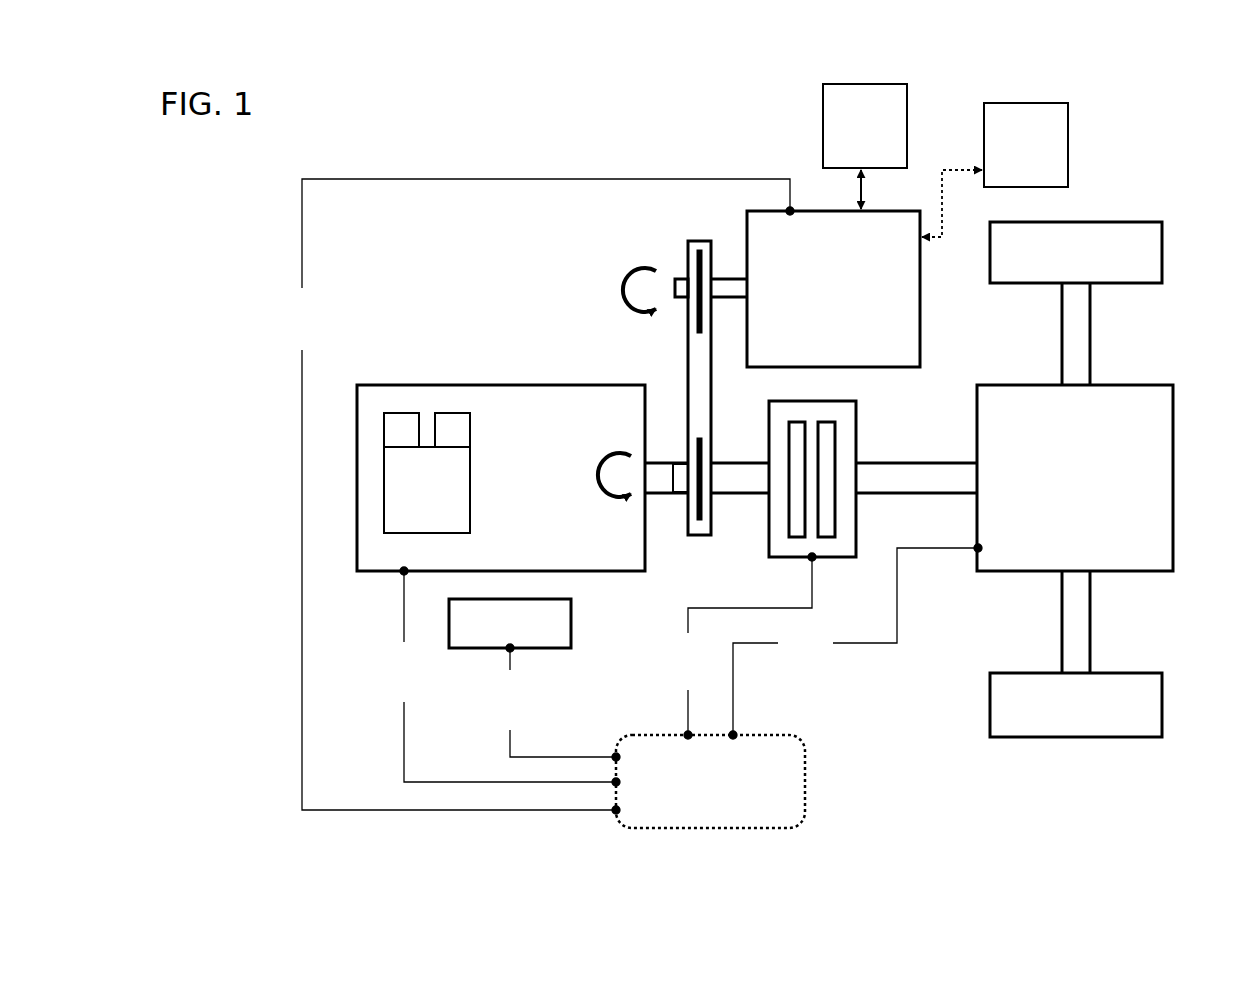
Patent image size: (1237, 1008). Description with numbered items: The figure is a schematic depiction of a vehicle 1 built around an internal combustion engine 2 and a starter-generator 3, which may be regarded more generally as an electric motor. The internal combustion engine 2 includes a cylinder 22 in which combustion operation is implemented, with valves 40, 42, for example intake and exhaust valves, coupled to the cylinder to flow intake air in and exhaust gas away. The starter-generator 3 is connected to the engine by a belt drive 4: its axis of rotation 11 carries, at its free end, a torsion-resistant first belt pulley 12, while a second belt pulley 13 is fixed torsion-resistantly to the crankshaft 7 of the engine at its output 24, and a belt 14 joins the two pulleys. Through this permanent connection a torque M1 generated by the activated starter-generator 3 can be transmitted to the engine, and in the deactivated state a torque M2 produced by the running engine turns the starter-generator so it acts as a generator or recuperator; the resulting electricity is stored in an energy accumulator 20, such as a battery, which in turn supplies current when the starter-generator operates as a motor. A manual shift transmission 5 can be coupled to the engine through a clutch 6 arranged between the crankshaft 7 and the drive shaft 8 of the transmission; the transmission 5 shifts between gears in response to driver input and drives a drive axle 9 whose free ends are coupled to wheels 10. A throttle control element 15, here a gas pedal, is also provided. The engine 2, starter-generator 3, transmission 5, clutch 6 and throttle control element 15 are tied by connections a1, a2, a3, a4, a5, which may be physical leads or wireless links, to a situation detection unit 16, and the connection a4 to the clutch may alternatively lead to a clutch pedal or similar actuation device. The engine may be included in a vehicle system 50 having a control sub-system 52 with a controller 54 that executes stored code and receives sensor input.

The vehicle 1 is at (898, 757).
The internal combustion engine 2 is at (501, 478).
The starter-generator 3 is at (833, 289).
The belt drive 4 is at (670, 368).
The manual shift transmission 5 is at (1075, 478).
The clutch 6 is at (858, 518).
The crankshaft 7 is at (665, 483).
The drive shaft 8 is at (888, 478).
The drive axle 9 is at (1118, 638).
The wheels 10 is at (1076, 479).
The axis of rotation 11 is at (725, 290).
The first belt pulley 12 is at (697, 275).
The second belt pulley 13 is at (700, 512).
The belt 14 is at (698, 345).
The throttle control element 15 is at (510, 623).
The situation detection unit 16 is at (710, 781).
The energy accumulator 20 is at (865, 146).
The cylinder 22 is at (427, 490).
The output 24 is at (678, 462).
The valve 40 is at (401, 430).
The valve 42 is at (452, 430).
The vehicle system 50 is at (313, 160).
The control sub-system 52 is at (1130, 158).
The controller 54 is at (995, 170).
The torque M1 is at (621, 277).
The torque M2 is at (596, 463).
The connection a1 is at (502, 676).
The connection a2 is at (304, 318).
The connection a3 is at (855, 641).
The connection a4 is at (742, 646).
The connection a5 is at (555, 702).